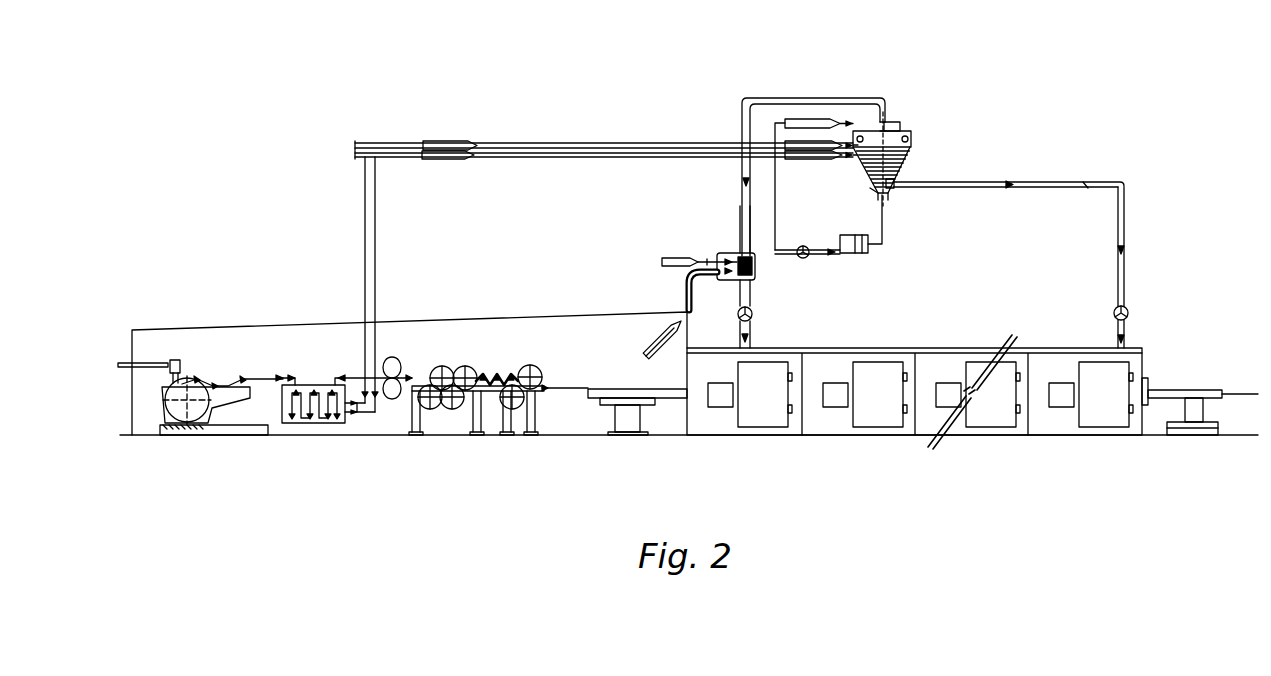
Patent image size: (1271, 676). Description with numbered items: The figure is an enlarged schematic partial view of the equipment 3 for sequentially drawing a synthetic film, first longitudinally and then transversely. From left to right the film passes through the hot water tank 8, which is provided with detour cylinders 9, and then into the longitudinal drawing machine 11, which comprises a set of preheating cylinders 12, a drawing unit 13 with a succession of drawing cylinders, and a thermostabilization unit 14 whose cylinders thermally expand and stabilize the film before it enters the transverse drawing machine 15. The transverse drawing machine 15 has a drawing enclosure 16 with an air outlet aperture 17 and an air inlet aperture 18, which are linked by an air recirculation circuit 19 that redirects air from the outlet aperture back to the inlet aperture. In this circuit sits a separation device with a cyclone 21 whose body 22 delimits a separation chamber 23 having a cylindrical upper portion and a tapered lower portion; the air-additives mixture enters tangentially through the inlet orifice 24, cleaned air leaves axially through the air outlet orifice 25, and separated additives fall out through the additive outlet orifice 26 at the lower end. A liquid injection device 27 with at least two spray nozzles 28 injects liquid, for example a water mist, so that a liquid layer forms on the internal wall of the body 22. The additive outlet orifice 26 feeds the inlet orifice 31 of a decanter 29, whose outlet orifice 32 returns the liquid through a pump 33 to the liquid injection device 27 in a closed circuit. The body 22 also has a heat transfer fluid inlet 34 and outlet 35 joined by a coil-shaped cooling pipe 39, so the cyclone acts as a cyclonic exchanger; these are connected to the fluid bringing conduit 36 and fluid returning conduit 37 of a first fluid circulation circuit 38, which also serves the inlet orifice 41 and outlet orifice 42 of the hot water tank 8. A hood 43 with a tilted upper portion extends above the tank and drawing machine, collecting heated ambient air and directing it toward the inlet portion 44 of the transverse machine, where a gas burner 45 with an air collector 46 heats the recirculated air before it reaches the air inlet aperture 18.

The equipment for sequential drawing 3 is at (677, 92).
The hot water tank 8 is at (290, 418).
The detour cylinders 9 is at (320, 416).
The longitudinal drawing machine 11 is at (545, 358).
The set of preheating cylinders 12 is at (432, 404).
The drawing unit 13 is at (493, 393).
The thermostabilization unit 14 is at (536, 373).
The transverse drawing machine 15 is at (878, 413).
The drawing enclosure 16 is at (893, 348).
The air outlet aperture 17 is at (1128, 333).
The air inlet aperture 18 is at (747, 346).
The air recirculation circuit 19 is at (1047, 182).
The separation device with a cyclone 21 is at (908, 152).
The body 22 is at (883, 169).
The separation chamber 23 is at (863, 160).
The inlet orifice 24 is at (898, 185).
The air outlet orifice 25 is at (878, 131).
The additive outlet orifice 26 is at (885, 194).
The liquid injection device 27 is at (893, 130).
The spray nozzles 28 is at (862, 136).
The decanter 29 is at (868, 255).
The inlet orifice 31 is at (868, 250).
The outlet orifice 32 is at (833, 256).
The pump 33 is at (803, 258).
The heat transfer fluid inlet 34 is at (870, 142).
The heat transfer fluid outlet 35 is at (870, 192).
The fluid bringing conduit 36 is at (395, 145).
The fluid returning conduit 37 is at (510, 158).
The first fluid circulation circuit 38 is at (546, 132).
The cooling pipe 39 is at (900, 130).
The inlet orifice 41 is at (358, 395).
The outlet orifice 42 is at (352, 402).
The hood 43 is at (518, 312).
The inlet portion 44 is at (612, 398).
The gas burner 45 is at (714, 246).
The air collector 46 is at (655, 347).